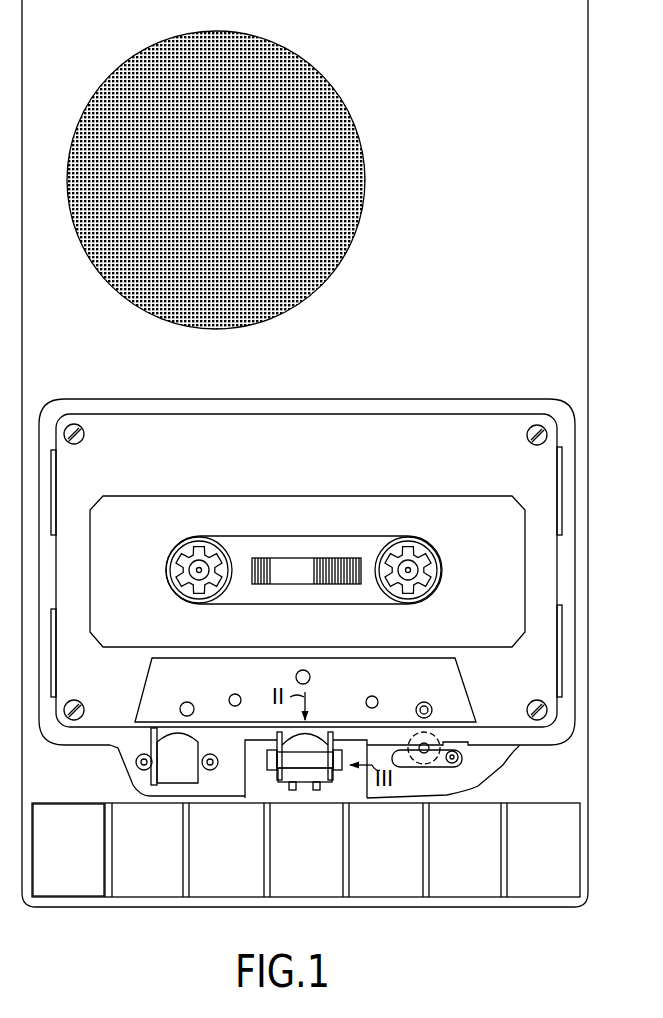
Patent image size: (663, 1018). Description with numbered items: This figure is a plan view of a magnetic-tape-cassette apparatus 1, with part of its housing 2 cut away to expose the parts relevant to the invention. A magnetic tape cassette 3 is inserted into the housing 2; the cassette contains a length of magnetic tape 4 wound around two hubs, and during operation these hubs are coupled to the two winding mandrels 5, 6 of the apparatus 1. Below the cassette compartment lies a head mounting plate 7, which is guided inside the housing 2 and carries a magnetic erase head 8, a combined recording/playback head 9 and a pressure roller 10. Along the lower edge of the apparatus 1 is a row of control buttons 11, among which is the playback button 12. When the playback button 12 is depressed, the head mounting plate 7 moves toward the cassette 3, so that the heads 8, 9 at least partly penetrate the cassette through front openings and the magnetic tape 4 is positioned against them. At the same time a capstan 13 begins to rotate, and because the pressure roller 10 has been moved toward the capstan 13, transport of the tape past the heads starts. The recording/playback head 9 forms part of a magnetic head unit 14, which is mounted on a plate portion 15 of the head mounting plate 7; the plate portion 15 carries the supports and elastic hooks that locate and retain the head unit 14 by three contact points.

The magnetic-tape-cassette apparatus 1 is at (594, 448).
The housing 2 is at (583, 700).
The magnetic tape cassette 3 is at (543, 504).
The magnetic tape 4 is at (272, 563).
The winding mandrel 5 is at (199, 570).
The winding mandrel 6 is at (409, 568).
The head mounting plate 7 is at (483, 770).
The magnetic erase head 8 is at (166, 773).
The combined recording/playback head 9 is at (305, 778).
The pressure roller 10 is at (436, 737).
The control buttons 11 is at (80, 876).
The playback button 12 is at (333, 893).
The capstan 13 is at (433, 707).
The magnetic head unit 14 is at (333, 720).
The plate portion 15 is at (362, 745).